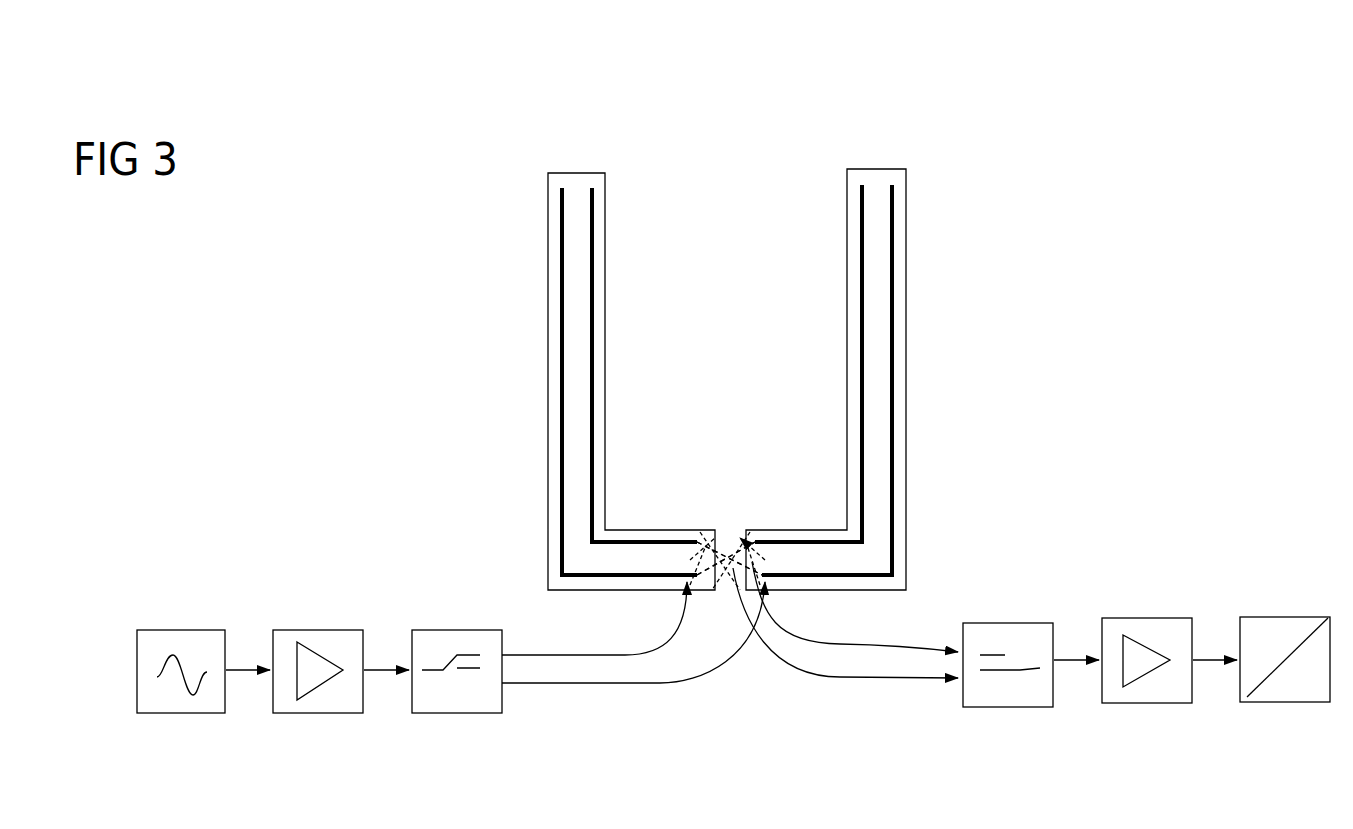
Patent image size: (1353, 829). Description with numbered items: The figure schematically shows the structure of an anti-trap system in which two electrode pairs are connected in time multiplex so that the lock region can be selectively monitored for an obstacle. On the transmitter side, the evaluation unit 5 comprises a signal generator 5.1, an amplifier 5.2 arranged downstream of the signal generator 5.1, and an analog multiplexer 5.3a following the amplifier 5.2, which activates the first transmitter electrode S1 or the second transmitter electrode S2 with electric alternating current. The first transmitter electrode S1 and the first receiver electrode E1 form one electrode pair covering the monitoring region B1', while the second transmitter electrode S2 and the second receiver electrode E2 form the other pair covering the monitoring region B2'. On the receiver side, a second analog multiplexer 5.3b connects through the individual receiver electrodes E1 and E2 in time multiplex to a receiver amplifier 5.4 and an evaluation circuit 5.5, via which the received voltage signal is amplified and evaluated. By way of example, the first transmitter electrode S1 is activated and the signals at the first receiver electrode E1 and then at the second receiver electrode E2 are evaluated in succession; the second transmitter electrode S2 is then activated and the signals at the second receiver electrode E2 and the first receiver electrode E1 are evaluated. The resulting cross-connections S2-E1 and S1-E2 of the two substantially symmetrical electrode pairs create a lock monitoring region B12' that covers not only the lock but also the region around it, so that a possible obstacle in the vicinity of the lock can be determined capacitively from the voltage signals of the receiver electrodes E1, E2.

The evaluation unit 5 is at (112, 586).
The signal generator 5.1 is at (172, 628).
The amplifier 5.2 is at (310, 627).
The analog multiplexer 5.3a is at (443, 627).
The second analog multiplexer 5.3b is at (1003, 621).
The receiver amplifier 5.4 is at (1143, 617).
The evaluation circuit 5.5 is at (1300, 617).
The first transmitter electrode S1 is at (559, 193).
The first receiver electrode E1 is at (594, 196).
The second receiver electrode E2 is at (860, 192).
The second transmitter electrode S2 is at (896, 197).
The monitoring region B1' is at (631, 381).
The monitoring region B2' is at (866, 379).
The lock monitoring region B12' is at (726, 630).
The connection from S2 to E1 S2-E1 is at (707, 533).
The connection from S1 to E2 S1-E2 is at (752, 533).